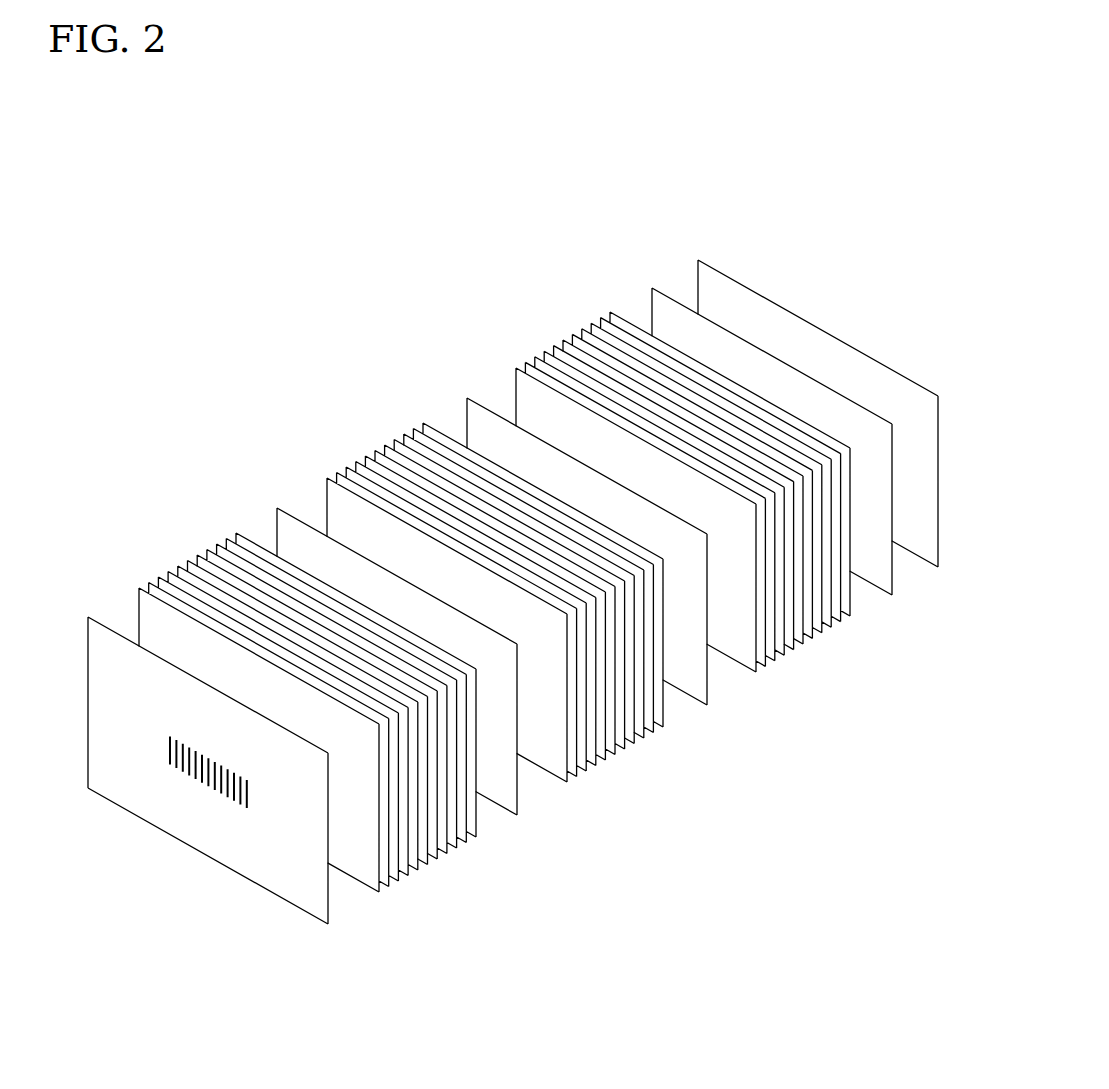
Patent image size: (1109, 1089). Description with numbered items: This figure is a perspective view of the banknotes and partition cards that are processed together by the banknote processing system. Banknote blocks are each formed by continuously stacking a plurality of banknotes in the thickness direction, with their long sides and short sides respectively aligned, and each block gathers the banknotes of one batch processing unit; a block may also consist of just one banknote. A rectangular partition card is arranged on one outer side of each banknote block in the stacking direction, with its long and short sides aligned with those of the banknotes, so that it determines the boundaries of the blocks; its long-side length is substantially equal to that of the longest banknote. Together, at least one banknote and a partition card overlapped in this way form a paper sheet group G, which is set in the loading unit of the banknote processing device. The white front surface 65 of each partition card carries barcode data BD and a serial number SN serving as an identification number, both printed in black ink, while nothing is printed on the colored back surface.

The paper sheet group G is at (497, 559).
The front surface 65 is at (293, 888).
The serial number SN is at (109, 787).
The barcode data BD is at (196, 802).